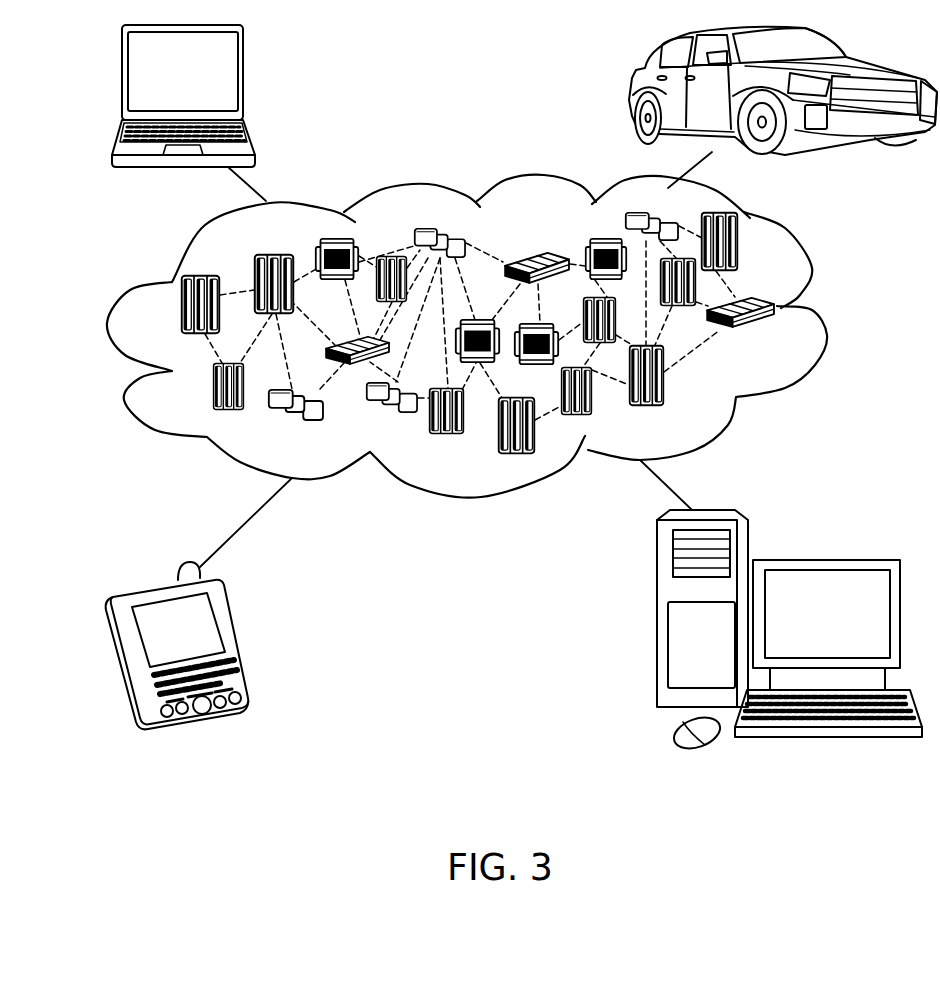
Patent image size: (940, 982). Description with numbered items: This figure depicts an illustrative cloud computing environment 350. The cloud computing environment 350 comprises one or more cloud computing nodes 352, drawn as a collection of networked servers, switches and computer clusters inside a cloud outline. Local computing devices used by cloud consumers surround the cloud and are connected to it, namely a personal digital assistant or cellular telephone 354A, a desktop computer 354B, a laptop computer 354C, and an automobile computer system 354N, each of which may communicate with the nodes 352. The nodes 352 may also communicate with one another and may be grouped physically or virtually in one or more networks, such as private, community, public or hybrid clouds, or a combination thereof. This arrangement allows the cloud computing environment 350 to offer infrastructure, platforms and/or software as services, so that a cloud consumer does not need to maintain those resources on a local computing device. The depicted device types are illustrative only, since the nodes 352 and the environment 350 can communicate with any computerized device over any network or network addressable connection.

The cloud computing environment 350 is at (499, 336).
The cloud computing nodes 352 is at (786, 341).
The personal digital assistant (PDA) or cellular telephone 354A is at (237, 642).
The desktop computer 354B is at (824, 560).
The laptop computer 354C is at (245, 78).
The automobile computer system 354N is at (634, 93).